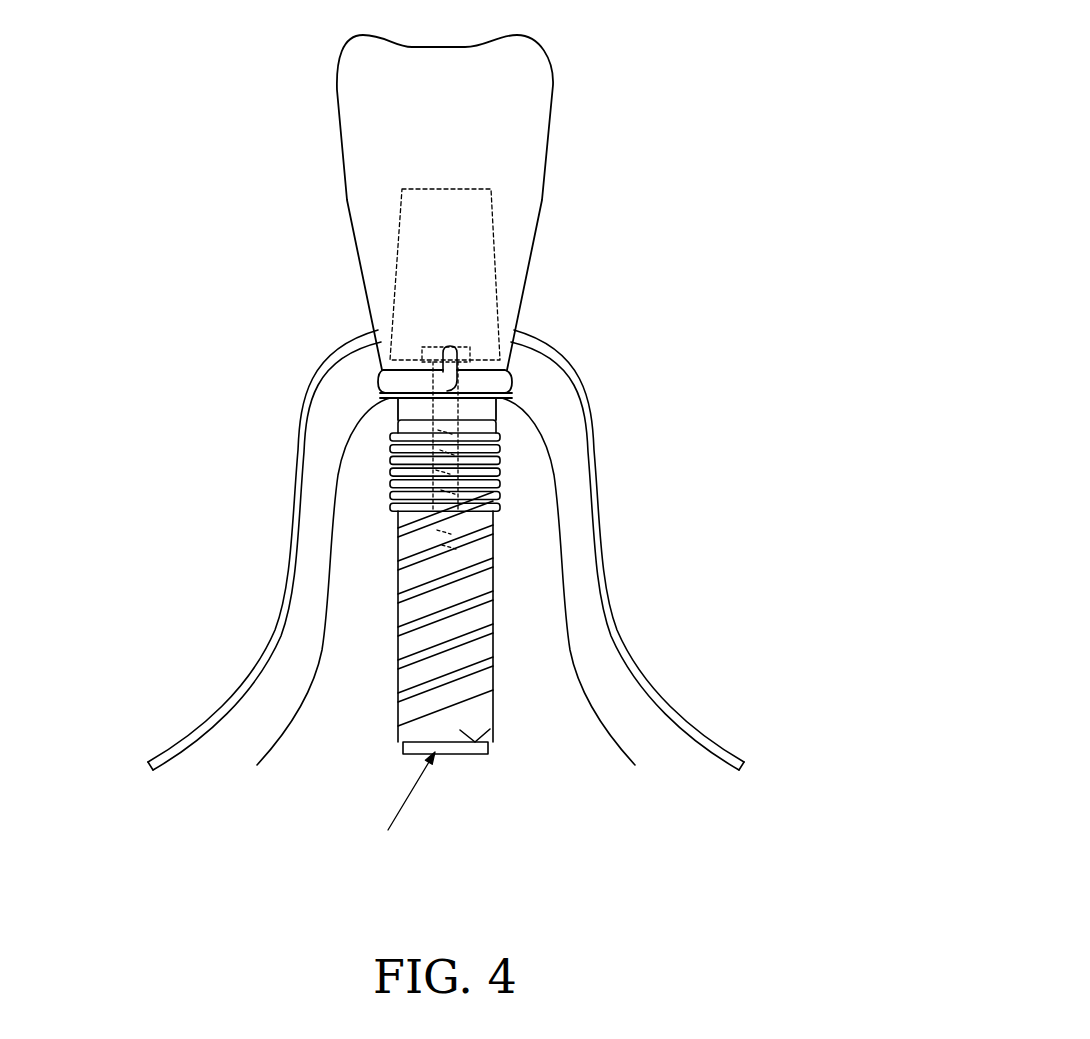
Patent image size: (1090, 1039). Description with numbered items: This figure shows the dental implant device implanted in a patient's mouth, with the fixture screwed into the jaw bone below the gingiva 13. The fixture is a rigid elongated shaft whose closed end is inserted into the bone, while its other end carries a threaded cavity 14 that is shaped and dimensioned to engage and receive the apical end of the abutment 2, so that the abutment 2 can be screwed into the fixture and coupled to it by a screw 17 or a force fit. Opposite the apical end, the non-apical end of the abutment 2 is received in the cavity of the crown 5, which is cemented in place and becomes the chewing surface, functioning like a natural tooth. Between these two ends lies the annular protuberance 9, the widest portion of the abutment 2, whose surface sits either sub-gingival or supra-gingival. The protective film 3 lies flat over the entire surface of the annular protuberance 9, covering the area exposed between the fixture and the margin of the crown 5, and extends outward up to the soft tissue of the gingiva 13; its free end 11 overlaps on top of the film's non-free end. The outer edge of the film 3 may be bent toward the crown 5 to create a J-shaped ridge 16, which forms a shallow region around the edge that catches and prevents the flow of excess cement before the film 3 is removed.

The abutment 2 is at (450, 471).
The protective film 3 is at (397, 371).
The crown 5 is at (529, 76).
The annular protuberance 9 is at (522, 383).
The free end 11 is at (442, 336).
The gingiva 13 is at (531, 430).
The threaded cavity 14 is at (396, 477).
The J-shaped ridge 16 is at (525, 397).
The screw 17 is at (428, 449).